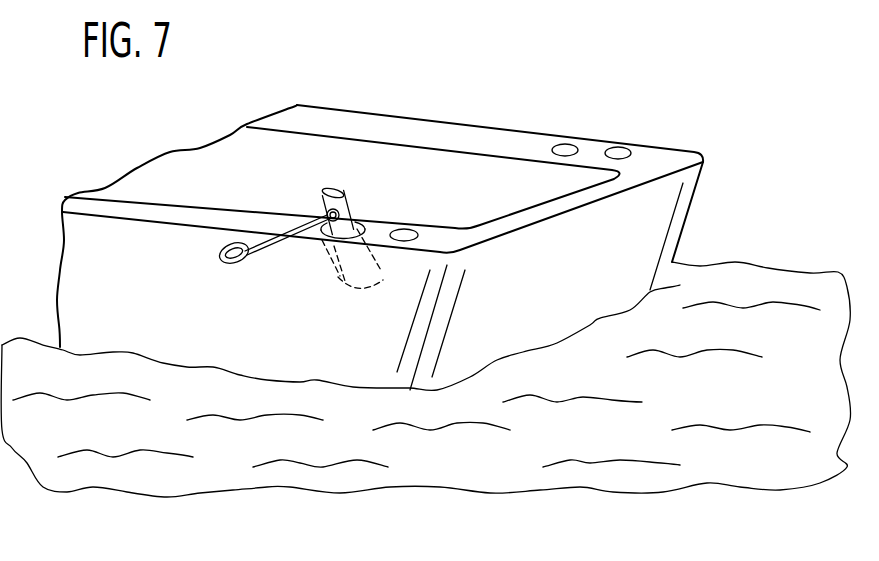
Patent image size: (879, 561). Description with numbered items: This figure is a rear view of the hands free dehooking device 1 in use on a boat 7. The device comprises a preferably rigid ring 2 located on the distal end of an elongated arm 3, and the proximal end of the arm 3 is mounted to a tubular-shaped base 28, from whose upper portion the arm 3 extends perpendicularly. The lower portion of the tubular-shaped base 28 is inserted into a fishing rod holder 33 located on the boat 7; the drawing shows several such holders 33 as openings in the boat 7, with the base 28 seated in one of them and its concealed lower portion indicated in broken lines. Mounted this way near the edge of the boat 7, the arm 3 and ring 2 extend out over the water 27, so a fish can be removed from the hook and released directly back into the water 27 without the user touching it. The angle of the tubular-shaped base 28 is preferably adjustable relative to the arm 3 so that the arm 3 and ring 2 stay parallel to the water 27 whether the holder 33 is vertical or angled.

The hands free dehooking device 1 is at (290, 210).
The ring 2 is at (223, 265).
The arm 3 is at (276, 244).
The boat 7 is at (402, 130).
The water 27 is at (768, 277).
The tubular-shaped base 28 is at (333, 191).
The fishing rod holder 33 is at (565, 150).